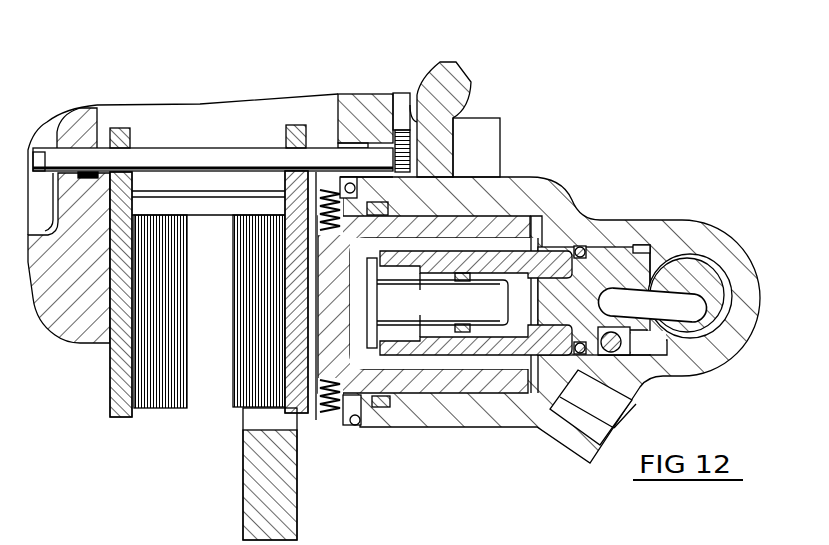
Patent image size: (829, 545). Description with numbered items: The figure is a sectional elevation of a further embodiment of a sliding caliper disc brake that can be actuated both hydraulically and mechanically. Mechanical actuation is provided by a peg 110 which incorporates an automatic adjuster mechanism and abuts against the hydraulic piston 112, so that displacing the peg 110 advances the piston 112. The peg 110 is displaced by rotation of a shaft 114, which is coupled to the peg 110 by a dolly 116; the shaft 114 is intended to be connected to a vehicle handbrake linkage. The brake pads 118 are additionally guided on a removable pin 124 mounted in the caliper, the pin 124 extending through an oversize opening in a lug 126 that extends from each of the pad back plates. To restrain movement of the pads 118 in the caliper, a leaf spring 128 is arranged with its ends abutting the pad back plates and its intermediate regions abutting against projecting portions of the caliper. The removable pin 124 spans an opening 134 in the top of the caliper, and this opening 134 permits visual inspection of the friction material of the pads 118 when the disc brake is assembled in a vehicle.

The peg 110 is at (460, 355).
The hydraulic piston 112 is at (488, 224).
The shaft 114 is at (678, 262).
The dolly 116 is at (677, 315).
The pads 118 is at (237, 408).
The removable pin 124 is at (228, 155).
The lug 126 is at (118, 127).
The leaf spring 128 is at (172, 192).
The opening 134 is at (232, 120).